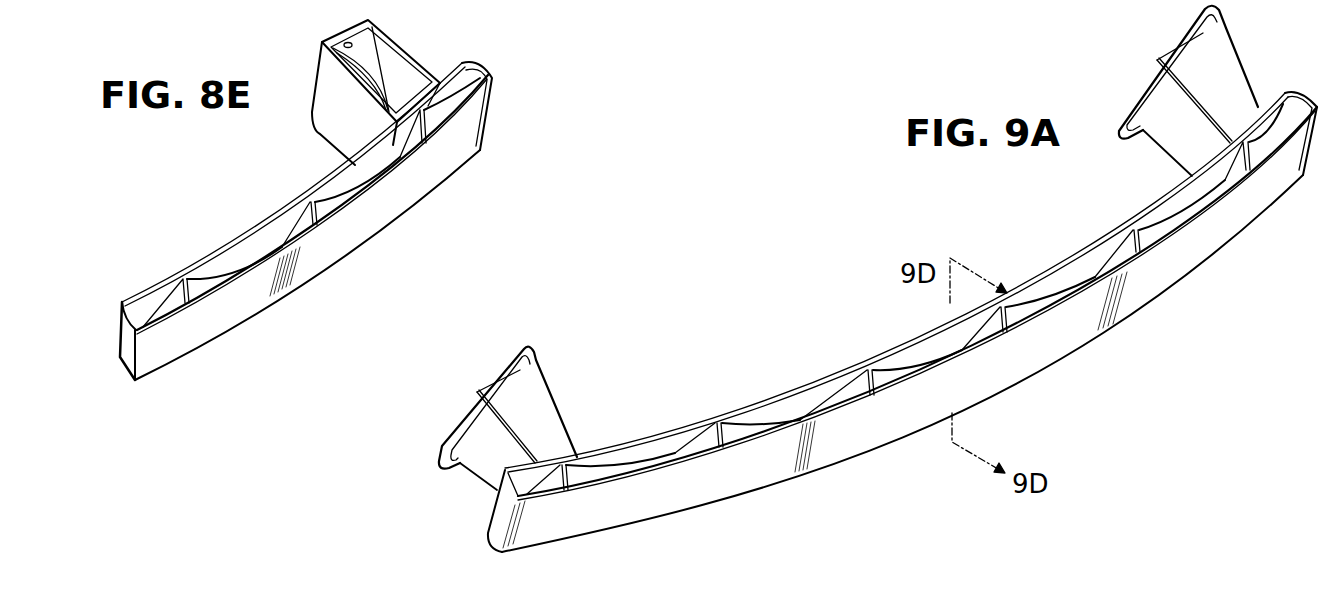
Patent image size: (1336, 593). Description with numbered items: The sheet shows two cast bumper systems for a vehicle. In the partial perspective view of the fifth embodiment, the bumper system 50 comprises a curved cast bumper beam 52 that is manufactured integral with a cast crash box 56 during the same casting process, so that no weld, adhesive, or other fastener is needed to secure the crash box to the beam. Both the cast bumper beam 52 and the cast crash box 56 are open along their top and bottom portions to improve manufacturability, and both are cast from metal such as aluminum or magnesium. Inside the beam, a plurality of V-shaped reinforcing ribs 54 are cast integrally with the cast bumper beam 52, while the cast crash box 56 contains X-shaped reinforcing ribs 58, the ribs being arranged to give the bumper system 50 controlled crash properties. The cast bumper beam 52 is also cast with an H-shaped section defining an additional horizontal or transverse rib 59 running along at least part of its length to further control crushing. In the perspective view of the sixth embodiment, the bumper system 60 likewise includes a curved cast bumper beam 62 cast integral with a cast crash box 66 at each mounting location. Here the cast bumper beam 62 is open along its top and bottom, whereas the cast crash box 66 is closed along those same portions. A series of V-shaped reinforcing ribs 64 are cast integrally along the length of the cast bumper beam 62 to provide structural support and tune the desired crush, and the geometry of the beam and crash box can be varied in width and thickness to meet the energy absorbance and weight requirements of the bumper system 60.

In FIG. 8E, the bumper system 50 is at (498, 99).
In FIG. 8E, the cast bumper beam 52 is at (338, 268).
In FIG. 8E, the reinforcing ribs 54 is at (443, 113).
In FIG. 8E, the cast crash box 56 is at (355, 92).
In FIG. 8E, the reinforcing ribs 58 is at (372, 52).
In FIG. 8E, the transverse rib 59 is at (132, 332).
In FIG. 9A, the bumper system 60 is at (598, 338).
In FIG. 9A, the cast bumper beam 62 is at (730, 502).
In FIG. 9A, the reinforcing ribs 64 is at (612, 466).
In FIG. 9A, the cast crash box 66 is at (542, 402).